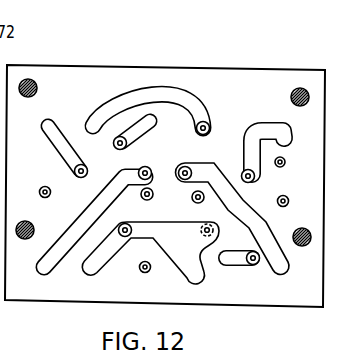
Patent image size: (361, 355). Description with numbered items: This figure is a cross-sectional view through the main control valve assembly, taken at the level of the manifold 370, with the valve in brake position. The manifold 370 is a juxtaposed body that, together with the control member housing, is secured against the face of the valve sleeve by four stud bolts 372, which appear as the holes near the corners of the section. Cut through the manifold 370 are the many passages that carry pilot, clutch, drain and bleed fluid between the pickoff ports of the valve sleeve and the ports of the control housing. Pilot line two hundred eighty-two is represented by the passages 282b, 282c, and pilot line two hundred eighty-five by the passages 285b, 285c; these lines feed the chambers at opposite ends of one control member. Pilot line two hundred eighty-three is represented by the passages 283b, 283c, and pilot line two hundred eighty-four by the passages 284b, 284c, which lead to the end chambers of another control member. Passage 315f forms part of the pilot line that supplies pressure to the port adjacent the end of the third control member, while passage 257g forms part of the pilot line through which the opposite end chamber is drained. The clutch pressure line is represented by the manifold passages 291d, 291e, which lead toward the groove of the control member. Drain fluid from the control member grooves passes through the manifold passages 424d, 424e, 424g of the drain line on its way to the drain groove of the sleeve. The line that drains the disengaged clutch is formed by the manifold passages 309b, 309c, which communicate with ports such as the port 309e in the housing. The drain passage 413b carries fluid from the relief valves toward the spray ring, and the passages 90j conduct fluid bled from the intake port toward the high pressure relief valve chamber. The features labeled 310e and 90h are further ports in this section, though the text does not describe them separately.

The manifold 370 is at (228, 72).
The stud bolts 372 is at (27, 80).
The manifold drain passage 424d is at (162, 84).
The manifold drain passage 424e is at (208, 124).
The manifold drain passage 424g is at (192, 196).
The manifold passage of pilot pressure line 282 282b is at (68, 172).
The manifold passage of pilot pressure line 282 282c is at (72, 110).
The manifold passage of pilot pressure line 285 285b is at (255, 177).
The manifold passage of pilot pressure line 285 285c is at (269, 123).
The manifold passage of clutch pressure line 291d is at (143, 126).
The manifold passage of clutch pressure line 291e is at (104, 143).
The drain passage 413b is at (278, 157).
The manifold passage of pilot line 283 283b is at (160, 162).
The manifold passage of pilot line 283 283c is at (55, 250).
The manifold passage of pilot line 284 284b is at (180, 170).
The manifold passage of pilot line 284 284c is at (306, 290).
The manifold passage of pilot pressure line 257 257g is at (50, 180).
The terminal pad 310e is at (148, 200).
The manifold passage of drain line 309 309b is at (140, 220).
The manifold passage of drain line 309 309c is at (171, 250).
The port of drain line 309 309e is at (214, 231).
The manifold passage of pilot line 315 315f is at (284, 206).
The terminal pad 90h is at (144, 272).
The manifold passages for relief valve bleed 90j is at (254, 265).